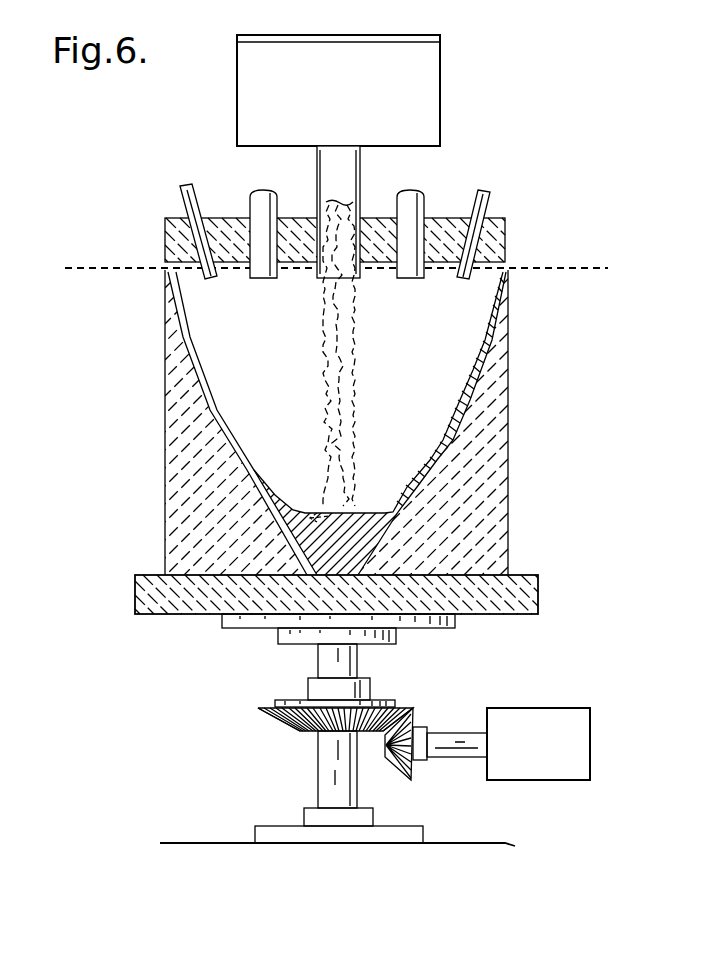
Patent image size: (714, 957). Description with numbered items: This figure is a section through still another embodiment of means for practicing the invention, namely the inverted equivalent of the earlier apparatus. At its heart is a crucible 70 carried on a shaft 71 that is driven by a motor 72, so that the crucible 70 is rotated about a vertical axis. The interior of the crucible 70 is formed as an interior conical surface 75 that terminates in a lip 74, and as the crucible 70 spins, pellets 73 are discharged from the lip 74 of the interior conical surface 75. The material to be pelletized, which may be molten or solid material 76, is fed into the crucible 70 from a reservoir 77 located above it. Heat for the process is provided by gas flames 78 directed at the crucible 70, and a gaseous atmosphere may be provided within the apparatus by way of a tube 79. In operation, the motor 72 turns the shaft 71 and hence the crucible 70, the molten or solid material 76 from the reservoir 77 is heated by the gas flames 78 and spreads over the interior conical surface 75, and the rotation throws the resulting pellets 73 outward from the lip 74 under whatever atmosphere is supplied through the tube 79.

The crucible 70 is at (500, 448).
The shaft 71 is at (325, 666).
The motor 72 is at (530, 718).
The pellets 73 is at (538, 268).
The lip 74 is at (509, 272).
The interior conical surface 75 is at (462, 396).
The molten or solid material 76 is at (350, 374).
The reservoir 77 is at (440, 82).
The gas flames 78 is at (256, 198).
The tube 79 is at (184, 197).